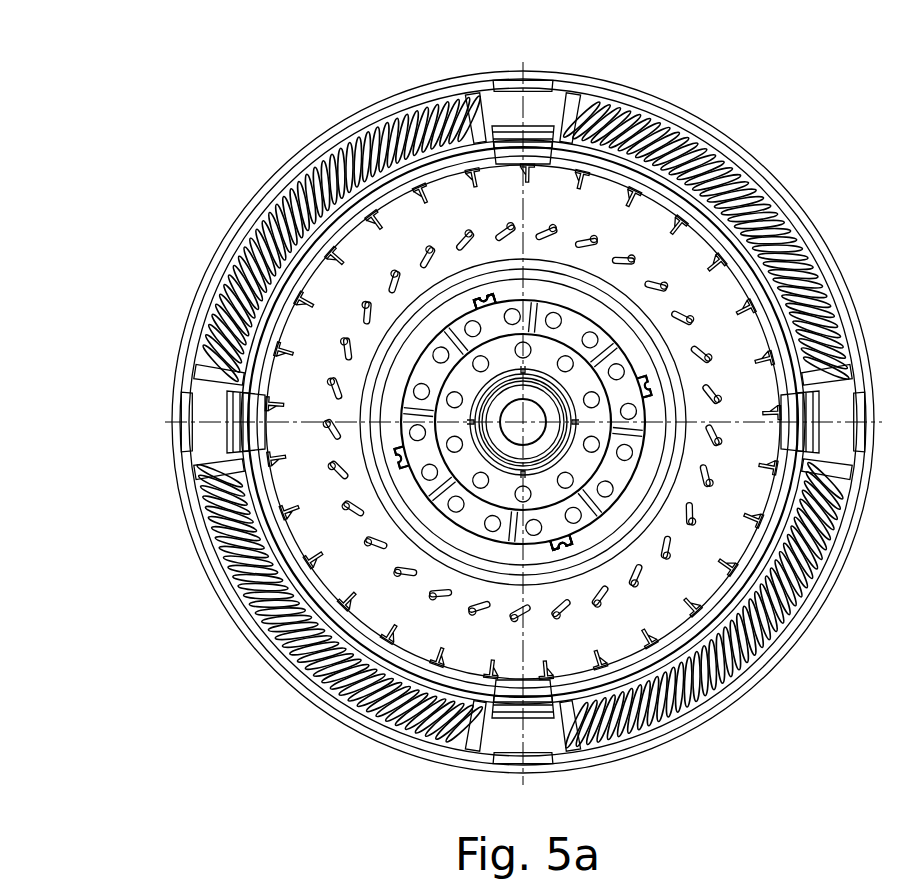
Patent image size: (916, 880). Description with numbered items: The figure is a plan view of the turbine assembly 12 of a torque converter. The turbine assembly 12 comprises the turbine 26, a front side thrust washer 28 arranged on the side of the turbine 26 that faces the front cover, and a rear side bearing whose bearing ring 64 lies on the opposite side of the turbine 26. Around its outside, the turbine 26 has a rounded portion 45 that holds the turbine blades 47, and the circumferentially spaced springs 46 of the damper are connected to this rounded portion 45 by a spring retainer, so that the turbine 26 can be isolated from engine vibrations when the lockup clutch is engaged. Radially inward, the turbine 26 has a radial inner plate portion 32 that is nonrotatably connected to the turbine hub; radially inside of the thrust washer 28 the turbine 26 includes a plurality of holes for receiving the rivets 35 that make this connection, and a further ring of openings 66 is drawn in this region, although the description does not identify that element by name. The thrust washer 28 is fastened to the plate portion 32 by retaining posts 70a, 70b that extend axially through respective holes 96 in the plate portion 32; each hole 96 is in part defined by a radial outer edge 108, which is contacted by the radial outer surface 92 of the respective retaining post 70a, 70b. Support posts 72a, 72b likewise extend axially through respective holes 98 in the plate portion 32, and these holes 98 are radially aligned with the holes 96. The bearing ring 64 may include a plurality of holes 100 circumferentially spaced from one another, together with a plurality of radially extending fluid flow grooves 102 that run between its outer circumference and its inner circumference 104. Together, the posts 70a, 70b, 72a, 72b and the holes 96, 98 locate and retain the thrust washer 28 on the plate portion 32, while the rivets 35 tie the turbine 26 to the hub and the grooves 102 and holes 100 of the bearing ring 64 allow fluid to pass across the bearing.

The turbine assembly 12 is at (300, 723).
The turbine 26 is at (330, 288).
The front side thrust washer 28 is at (460, 325).
The radial inner plate portion 32 is at (597, 533).
The rivets 35 is at (488, 490).
The rounded portion 45 is at (712, 708).
The springs 46 is at (743, 160).
The turbine blades 47 is at (813, 217).
The bearing ring 64 is at (638, 468).
The rivet holes 66 is at (575, 323).
The retaining post 70a is at (498, 292).
The retaining post 70b is at (570, 548).
The support post 72a is at (653, 381).
The support post 72b is at (400, 465).
The radial outer surface 92 is at (483, 294).
The holes 96 is at (519, 291).
The holes 98 is at (402, 446).
The holes 100 is at (485, 490).
The fluid flow grooves 102 is at (398, 490).
The inner circumference 104 is at (412, 368).
The radial outer edge 108 is at (523, 422).